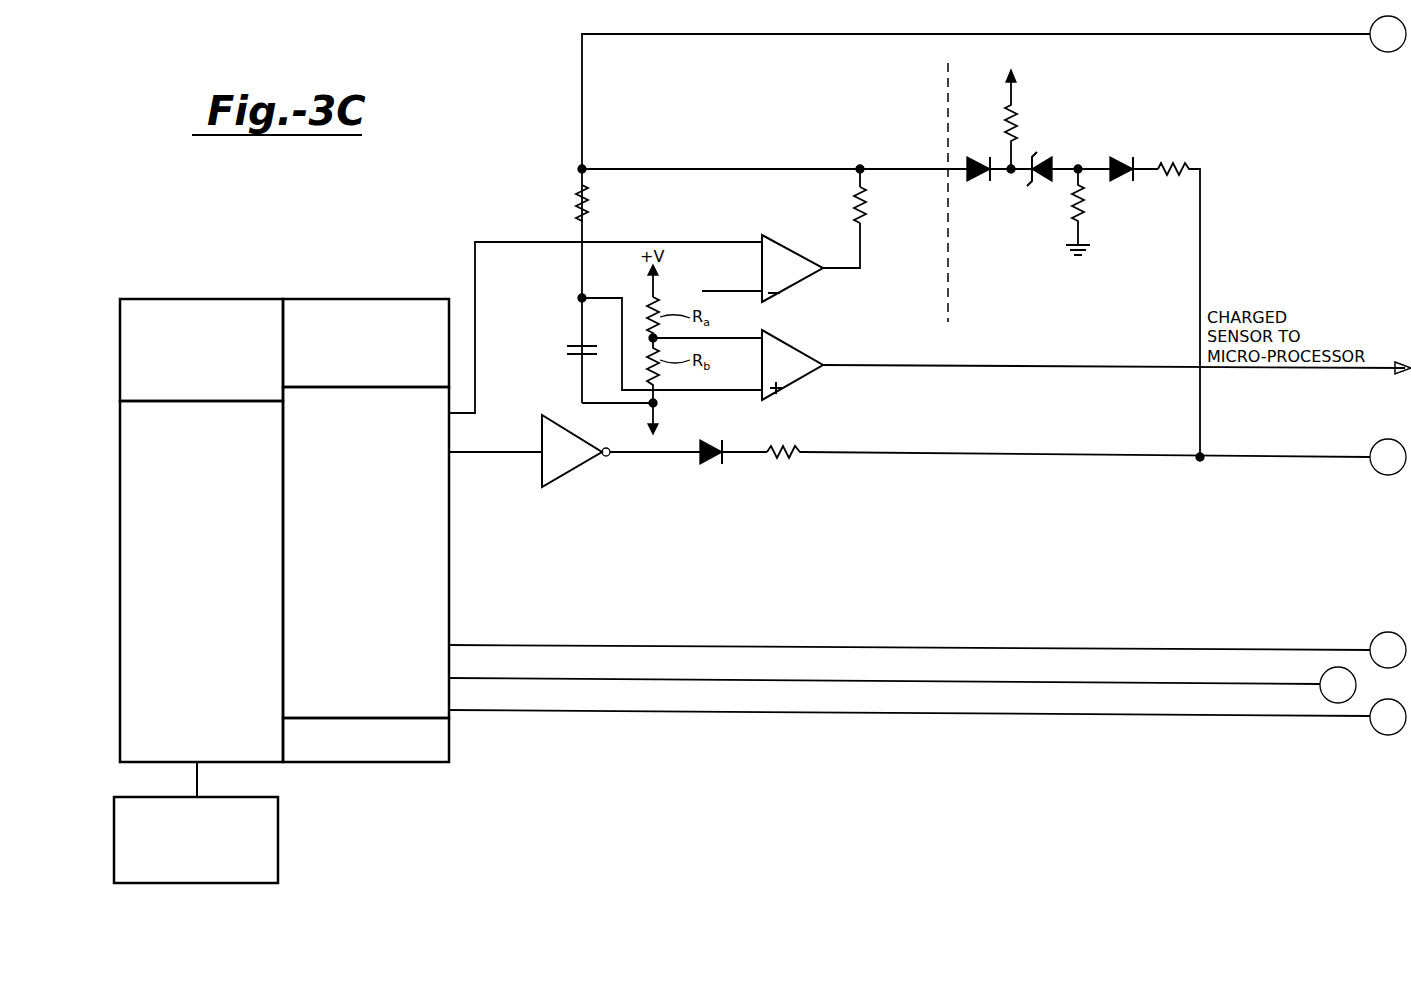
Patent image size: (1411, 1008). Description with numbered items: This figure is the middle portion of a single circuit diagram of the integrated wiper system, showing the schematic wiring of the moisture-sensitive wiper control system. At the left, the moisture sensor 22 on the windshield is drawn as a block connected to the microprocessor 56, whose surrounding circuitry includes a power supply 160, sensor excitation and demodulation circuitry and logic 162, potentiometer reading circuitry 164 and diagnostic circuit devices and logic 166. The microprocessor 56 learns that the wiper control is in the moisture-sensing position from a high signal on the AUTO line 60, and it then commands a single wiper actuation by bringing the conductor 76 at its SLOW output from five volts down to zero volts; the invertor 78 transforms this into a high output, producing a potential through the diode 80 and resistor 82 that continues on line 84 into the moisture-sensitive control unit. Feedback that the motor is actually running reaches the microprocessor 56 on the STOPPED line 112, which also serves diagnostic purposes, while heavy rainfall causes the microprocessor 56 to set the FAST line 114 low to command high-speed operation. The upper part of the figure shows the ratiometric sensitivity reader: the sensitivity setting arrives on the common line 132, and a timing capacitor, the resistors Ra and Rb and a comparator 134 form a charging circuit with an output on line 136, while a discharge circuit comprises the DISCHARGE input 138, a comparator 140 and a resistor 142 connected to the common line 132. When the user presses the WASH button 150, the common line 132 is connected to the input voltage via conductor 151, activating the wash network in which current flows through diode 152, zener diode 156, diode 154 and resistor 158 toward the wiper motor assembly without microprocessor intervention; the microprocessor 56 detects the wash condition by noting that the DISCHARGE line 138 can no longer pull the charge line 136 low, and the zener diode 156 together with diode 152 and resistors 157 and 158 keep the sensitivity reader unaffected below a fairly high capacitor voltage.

The moisture sensor 22 is at (278, 852).
The microprocessor 56 is at (448, 565).
The AUTO line 60 is at (990, 714).
The conductor 76 is at (472, 455).
The invertor 78 is at (570, 470).
The diode 80 is at (700, 465).
The resistor 82 is at (790, 462).
The line 84 is at (1202, 297).
The STOPPED line 112 is at (995, 682).
The FAST line 114 is at (998, 648).
The common line 132 is at (582, 108).
The comparator 134 is at (790, 335).
The charge line 136 is at (865, 368).
The maximum discharge signal input 138 is at (597, 242).
The comparator 140 is at (780, 240).
The resistor 142 is at (868, 210).
The WASH button 150 is at (948, 100).
The conductor 151 is at (960, 172).
The diode 152 is at (968, 160).
The diode 154 is at (1115, 185).
The zener diode 156 is at (1052, 160).
The resistor 157 is at (1015, 128).
The resistor 158 is at (1165, 162).
The power supply 160 is at (204, 299).
The sensor excitation and demodulation circuitry 162 is at (213, 648).
The potentiometer reading circuitry 164 is at (335, 299).
The diagnostic circuit devices 166 is at (449, 745).